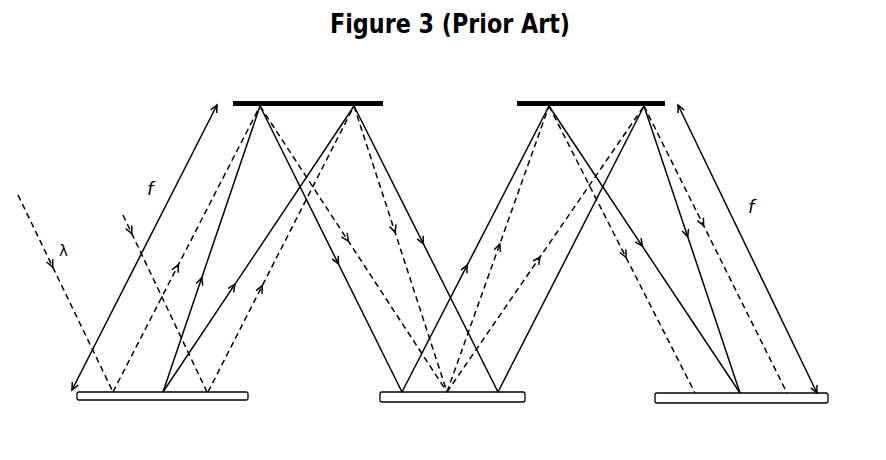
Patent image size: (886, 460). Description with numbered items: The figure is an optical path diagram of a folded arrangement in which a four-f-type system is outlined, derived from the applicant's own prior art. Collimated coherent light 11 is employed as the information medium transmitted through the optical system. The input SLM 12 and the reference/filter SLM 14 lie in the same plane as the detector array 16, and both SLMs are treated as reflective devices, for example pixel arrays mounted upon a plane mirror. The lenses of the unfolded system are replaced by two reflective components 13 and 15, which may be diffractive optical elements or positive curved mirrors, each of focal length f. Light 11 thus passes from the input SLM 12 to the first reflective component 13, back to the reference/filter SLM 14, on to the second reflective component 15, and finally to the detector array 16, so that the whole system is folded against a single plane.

The collimated coherent light 11 is at (121, 212).
The input SLM 12 is at (142, 402).
The first reflective component 13 is at (305, 93).
The reference/filter SLM 14 is at (465, 403).
The second reflective component 15 is at (613, 98).
The detector array 16 is at (718, 405).